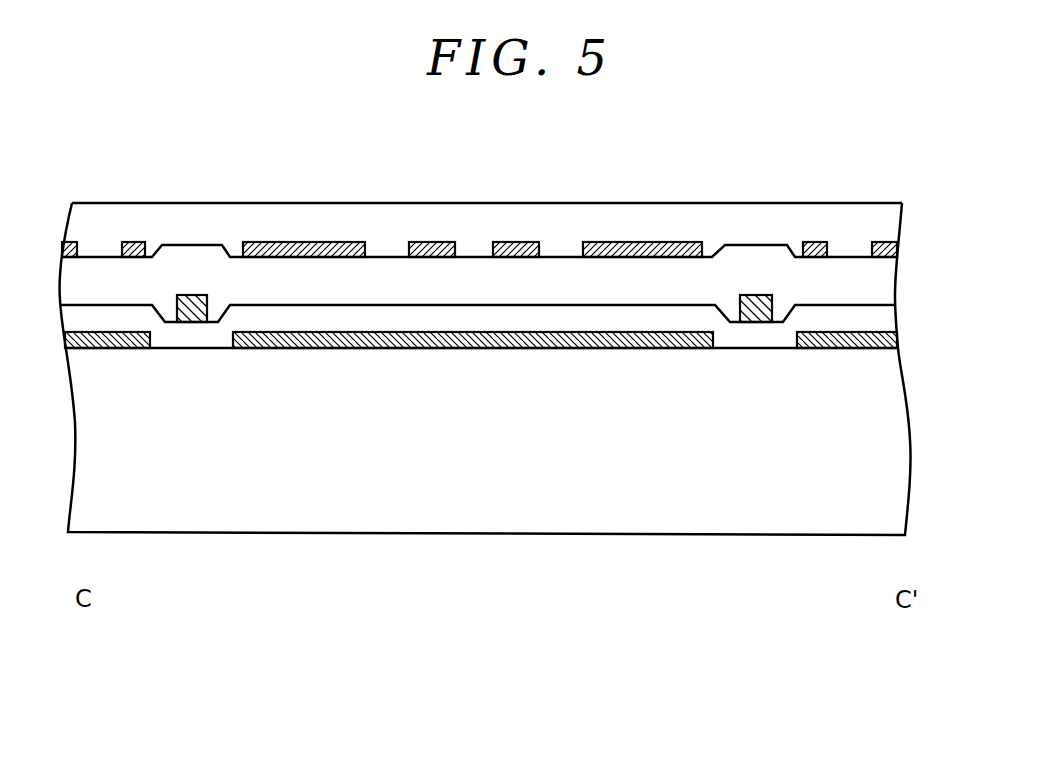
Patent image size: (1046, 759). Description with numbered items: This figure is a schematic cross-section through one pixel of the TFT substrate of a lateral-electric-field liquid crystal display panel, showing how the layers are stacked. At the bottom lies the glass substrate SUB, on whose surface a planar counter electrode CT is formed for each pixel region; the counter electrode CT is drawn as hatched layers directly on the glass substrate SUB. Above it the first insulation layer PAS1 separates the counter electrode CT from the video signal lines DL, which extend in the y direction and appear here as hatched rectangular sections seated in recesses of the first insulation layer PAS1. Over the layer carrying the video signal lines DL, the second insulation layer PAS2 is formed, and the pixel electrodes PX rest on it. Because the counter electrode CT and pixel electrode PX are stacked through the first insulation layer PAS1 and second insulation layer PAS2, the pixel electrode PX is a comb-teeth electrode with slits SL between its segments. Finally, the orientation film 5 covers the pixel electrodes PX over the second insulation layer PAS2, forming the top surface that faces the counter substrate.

The orientation film 5 is at (197, 227).
The pixel electrode PX is at (137, 241).
The slit SL is at (386, 247).
The first insulation layer PAS1 is at (553, 320).
The second insulation layer PAS2 is at (763, 262).
The video signal line DL is at (190, 320).
The counter electrode CT is at (407, 352).
The glass substrate SUB is at (548, 502).